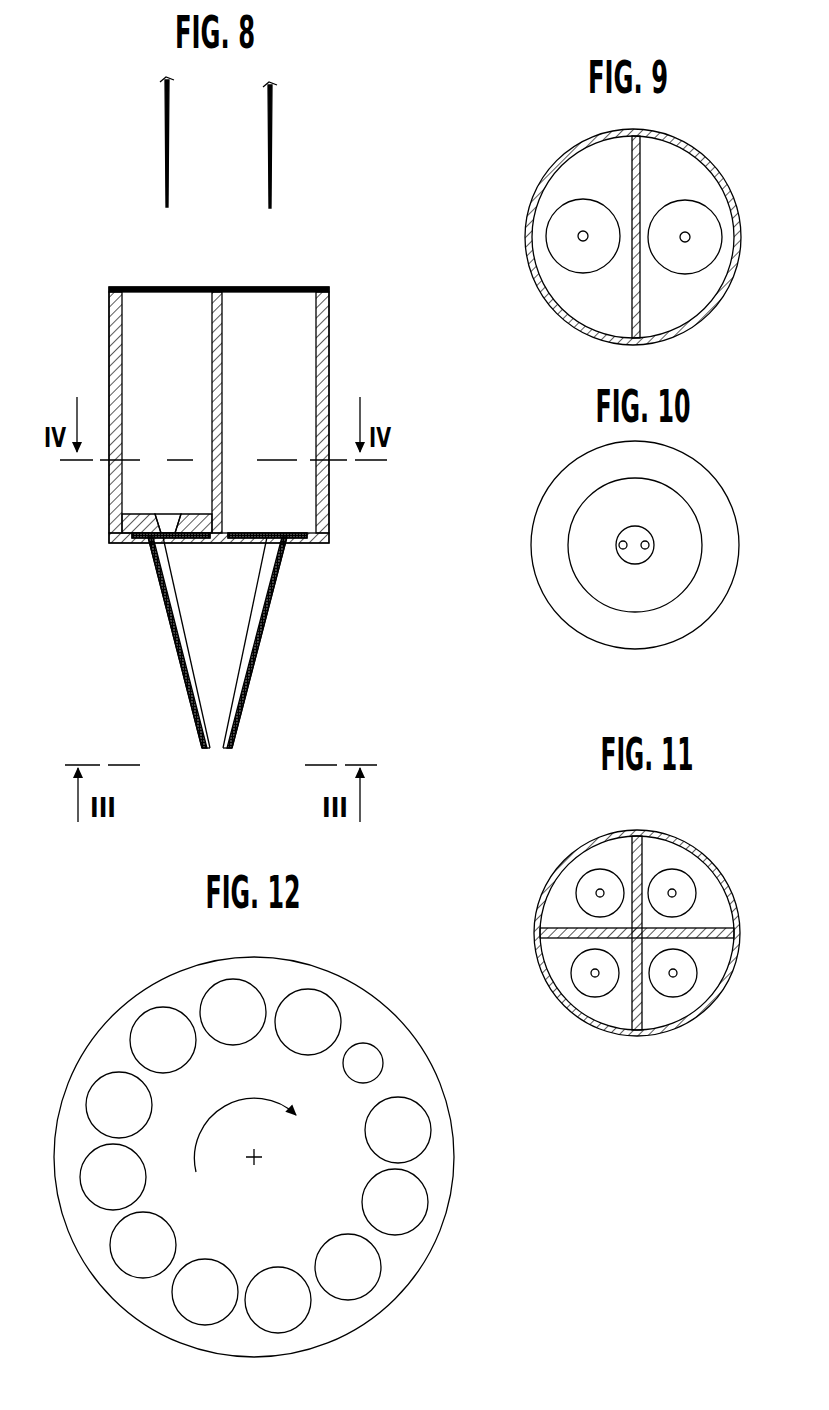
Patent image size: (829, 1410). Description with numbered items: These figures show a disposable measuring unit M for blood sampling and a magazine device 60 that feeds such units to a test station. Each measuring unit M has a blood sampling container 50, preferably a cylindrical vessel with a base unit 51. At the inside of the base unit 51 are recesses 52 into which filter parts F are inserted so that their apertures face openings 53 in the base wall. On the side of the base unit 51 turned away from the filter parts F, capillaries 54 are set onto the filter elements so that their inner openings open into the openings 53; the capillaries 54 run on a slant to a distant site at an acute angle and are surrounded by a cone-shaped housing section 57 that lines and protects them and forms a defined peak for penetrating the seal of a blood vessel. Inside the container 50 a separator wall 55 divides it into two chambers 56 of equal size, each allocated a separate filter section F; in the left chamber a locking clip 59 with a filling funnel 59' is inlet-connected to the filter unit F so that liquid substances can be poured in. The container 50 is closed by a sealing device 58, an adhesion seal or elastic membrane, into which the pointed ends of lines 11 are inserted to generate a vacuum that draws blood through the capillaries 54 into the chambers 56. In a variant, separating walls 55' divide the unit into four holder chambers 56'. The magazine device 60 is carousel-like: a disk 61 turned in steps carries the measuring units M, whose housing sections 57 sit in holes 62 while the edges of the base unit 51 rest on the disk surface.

In FIG. 8, the lines 11 is at (170, 122).
In FIG. 8, the blood sampling container 50 is at (322, 380).
In FIG. 9, the blood sampling container 50 is at (735, 222).
In FIG. 10, the blood sampling container 50 is at (730, 497).
In FIG. 11, the blood sampling container 50 is at (735, 920).
In FIG. 8, the base unit 51 is at (320, 545).
In FIG. 9, the base unit 51 is at (690, 180).
In FIG. 8, the recesses 52 is at (133, 545).
In FIG. 9, the recesses 52 is at (550, 222).
In FIG. 11, the recesses 52 is at (590, 875).
In FIG. 8, the openings 53 is at (153, 563).
In FIG. 9, the openings 53 is at (578, 238).
In FIG. 11, the openings 53 is at (600, 893).
In FIG. 8, the capillaries 54 is at (183, 607).
In FIG. 10, the capillaries 54 is at (650, 544).
In FIG. 8, the separator wall 55 is at (242, 412).
In FIG. 9, the separator wall 55 is at (569, 237).
In FIG. 11, the separating walls 55' is at (667, 911).
In FIG. 8, the chambers 56 is at (219, 412).
In FIG. 9, the chambers 56 is at (627, 300).
In FIG. 11, the holder chambers 56' is at (638, 978).
In FIG. 8, the housing section 57 is at (250, 690).
In FIG. 10, the housing section 57 is at (685, 570).
In FIG. 8, the sealing device 58 is at (268, 288).
In FIG. 8, the locking clip 59 is at (138, 533).
In FIG. 8, the filling funnel 59' is at (172, 501).
In FIG. 12, the magazine device 60 is at (462, 1249).
In FIG. 12, the disk 61 is at (440, 1158).
In FIG. 12, the holes 62 is at (380, 1050).
In FIG. 8, the filter parts F is at (247, 565).
In FIG. 8, the measuring unit M is at (350, 507).
In FIG. 12, the measuring unit M is at (210, 983).